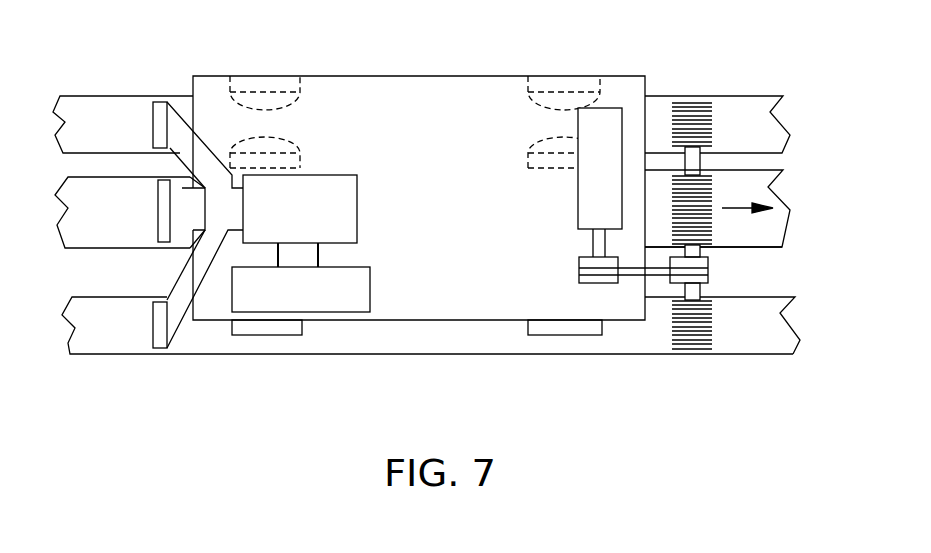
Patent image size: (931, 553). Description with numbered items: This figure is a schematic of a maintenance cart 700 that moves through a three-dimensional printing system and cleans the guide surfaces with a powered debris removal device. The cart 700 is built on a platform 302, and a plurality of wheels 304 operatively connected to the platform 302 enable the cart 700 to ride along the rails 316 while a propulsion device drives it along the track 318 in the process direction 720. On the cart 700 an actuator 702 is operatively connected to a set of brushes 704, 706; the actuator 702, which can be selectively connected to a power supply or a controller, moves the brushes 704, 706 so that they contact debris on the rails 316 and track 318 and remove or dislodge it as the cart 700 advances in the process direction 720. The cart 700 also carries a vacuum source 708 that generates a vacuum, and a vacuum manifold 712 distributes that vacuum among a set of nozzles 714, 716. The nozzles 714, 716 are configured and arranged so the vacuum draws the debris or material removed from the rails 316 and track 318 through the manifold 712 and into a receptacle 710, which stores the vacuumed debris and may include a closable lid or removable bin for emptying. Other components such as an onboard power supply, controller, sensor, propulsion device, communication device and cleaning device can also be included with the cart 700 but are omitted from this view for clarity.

The platform 302 is at (193, 75).
The wheels 304 is at (528, 82).
The rails 316 is at (122, 96).
The track 318 is at (728, 248).
The cart 700 is at (500, 336).
The actuator 702 is at (578, 213).
The brush 704 is at (683, 102).
The brush 706 is at (709, 185).
The vacuum source 708 is at (352, 175).
The receptacle 710 is at (365, 268).
The vacuum manifold 712 is at (187, 262).
The nozzle 714 is at (153, 135).
The nozzle 716 is at (157, 223).
The process direction 720 is at (740, 213).